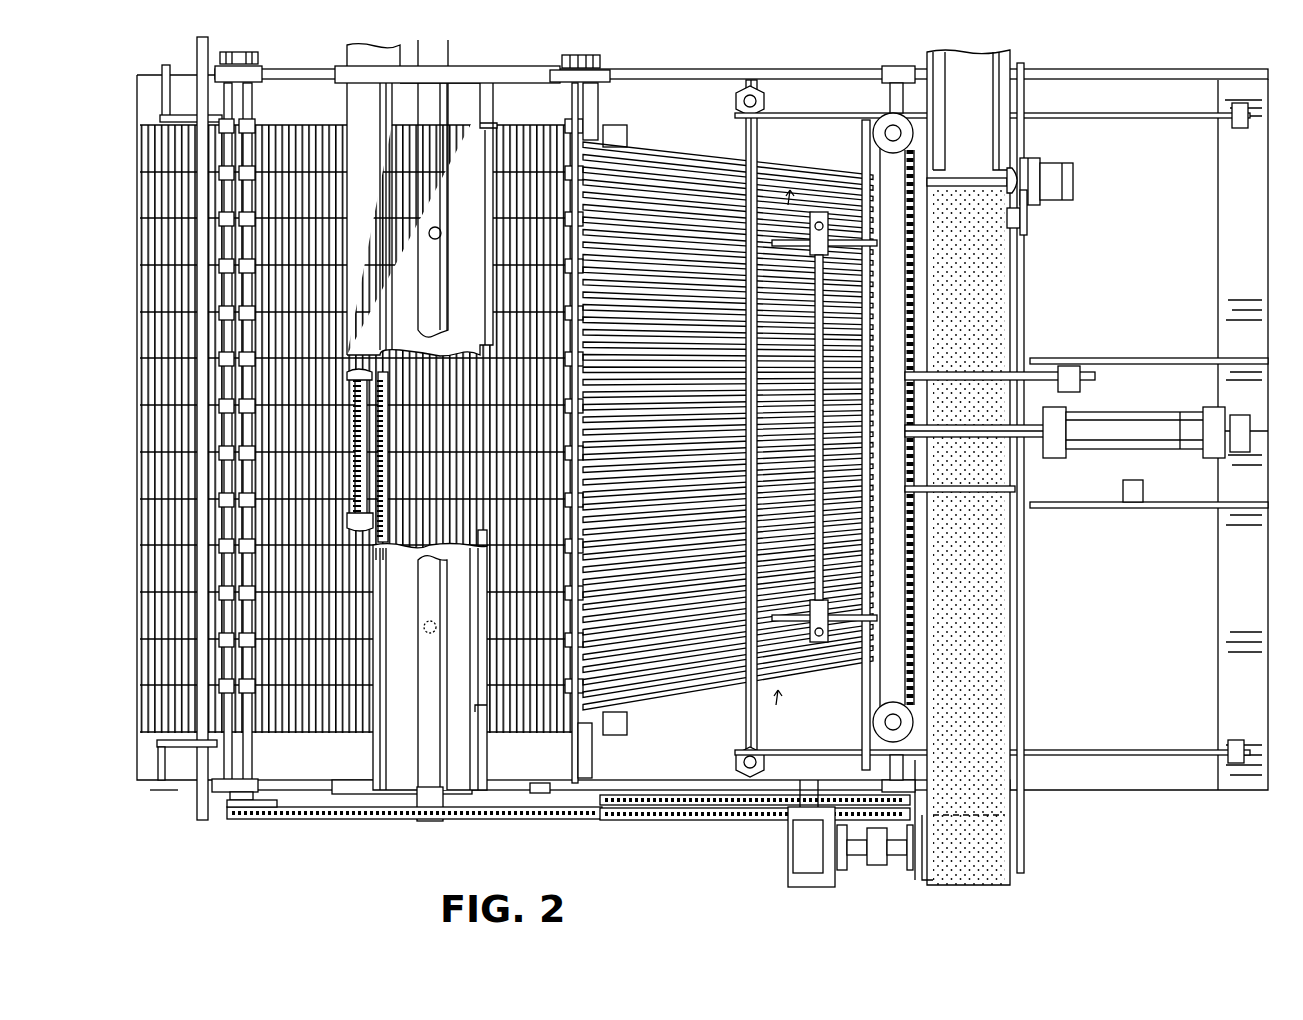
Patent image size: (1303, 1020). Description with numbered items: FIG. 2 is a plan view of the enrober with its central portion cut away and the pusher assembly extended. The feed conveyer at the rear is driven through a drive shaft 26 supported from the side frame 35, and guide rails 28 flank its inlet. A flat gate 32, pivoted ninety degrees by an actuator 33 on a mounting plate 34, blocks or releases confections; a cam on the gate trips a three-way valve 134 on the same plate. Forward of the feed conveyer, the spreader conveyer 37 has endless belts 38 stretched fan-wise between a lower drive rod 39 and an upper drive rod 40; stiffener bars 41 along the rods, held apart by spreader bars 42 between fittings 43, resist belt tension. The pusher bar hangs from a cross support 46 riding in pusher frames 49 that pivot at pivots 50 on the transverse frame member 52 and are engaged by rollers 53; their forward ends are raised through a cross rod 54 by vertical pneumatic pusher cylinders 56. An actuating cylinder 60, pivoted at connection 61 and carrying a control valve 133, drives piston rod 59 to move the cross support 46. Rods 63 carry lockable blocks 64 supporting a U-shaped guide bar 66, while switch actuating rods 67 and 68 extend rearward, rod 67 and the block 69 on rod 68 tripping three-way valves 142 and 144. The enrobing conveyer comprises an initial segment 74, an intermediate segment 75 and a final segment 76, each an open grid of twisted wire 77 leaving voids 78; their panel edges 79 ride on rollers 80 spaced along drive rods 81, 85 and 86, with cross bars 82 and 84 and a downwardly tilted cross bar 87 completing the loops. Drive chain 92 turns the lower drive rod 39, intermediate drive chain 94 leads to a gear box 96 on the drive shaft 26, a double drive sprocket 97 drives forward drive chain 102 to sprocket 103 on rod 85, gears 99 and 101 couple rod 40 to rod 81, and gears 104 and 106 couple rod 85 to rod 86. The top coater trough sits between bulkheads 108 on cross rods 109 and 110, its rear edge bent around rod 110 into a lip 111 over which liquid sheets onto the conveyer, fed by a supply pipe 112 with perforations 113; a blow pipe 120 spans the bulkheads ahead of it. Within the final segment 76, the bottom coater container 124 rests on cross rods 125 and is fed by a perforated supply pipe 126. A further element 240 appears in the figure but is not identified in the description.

The drive shaft 26 is at (887, 868).
The guide rails 28 is at (1000, 100).
The gate 32 is at (1015, 170).
The gate actuator 33 is at (1060, 185).
The mounting plate 34 is at (1022, 220).
The side frame 35 is at (715, 73).
The spreader conveyer 37 is at (700, 745).
The endless cords or belts 38 is at (802, 436).
The lower drive rod 39 is at (890, 100).
The upper drive rod 40 is at (598, 105).
The stiffener bar 41 is at (596, 745).
The spreader bars 42 is at (680, 145).
The fitting 43 is at (627, 730).
The cross support 46 is at (818, 650).
The pusher frames 49 is at (1115, 118).
The pivot 50 is at (1232, 118).
The rear enrober transverse frame member 52 is at (1268, 735).
The roller 53 is at (873, 133).
The cross rod 54 is at (758, 742).
The pneumatic pusher cylinder 56 is at (736, 101).
The piston rod 59 is at (1050, 452).
The actuating cylinder 60 is at (1112, 450).
The pivotal connection 61 is at (1255, 430).
The rod 63 is at (840, 240).
The block 64 is at (819, 212).
The guide bar 66 is at (905, 345).
The switch actuating rod 67 is at (1010, 492).
The switch actuating rod 68 is at (1000, 372).
The block 69 is at (1082, 386).
The initial conveyer segment 74 is at (530, 815).
The intermediate conveyer segment 75 is at (292, 805).
The final conveyer segment 76 is at (158, 770).
The wire 77 is at (306, 738).
The voids 78 is at (268, 738).
The panel edges 79 is at (330, 615).
The rollers 80 is at (219, 655).
The drive rod 81 is at (572, 110).
The cross bar 82 is at (375, 532).
The cross bar 84 is at (370, 378).
The drive rod 85 is at (252, 95).
The drive rod 86 is at (224, 95).
The cross bar 87 is at (138, 700).
The endless drive chain 92 is at (742, 820).
The intermediate drive chain 94 is at (722, 800).
The gear box 96 is at (790, 850).
The double drive sprocket 97 is at (590, 800).
The gear 99 is at (598, 57).
The gear 101 is at (570, 70).
The forward drive chain 102 is at (520, 800).
The drive sprocket 103 is at (228, 819).
The gear 104 is at (258, 58).
The gear 106 is at (230, 52).
The bulkheads 108 is at (500, 66).
The cross rod 109 is at (380, 556).
The cross rod 110 is at (482, 548).
The lip 111 is at (487, 710).
The supply pipe 112 is at (432, 664).
The perforations 113 is at (437, 627).
The blow pipe 120 is at (386, 266).
The open top container 124 is at (160, 742).
The cross rods 125 is at (163, 792).
The perforated supply pipe 126 is at (197, 810).
The control valve 133 is at (1180, 412).
The three-way valve 134 is at (1026, 235).
The three-way valve 142 is at (1143, 492).
The three-way valve 144 is at (1060, 362).
The stippled column 240 is at (1010, 805).